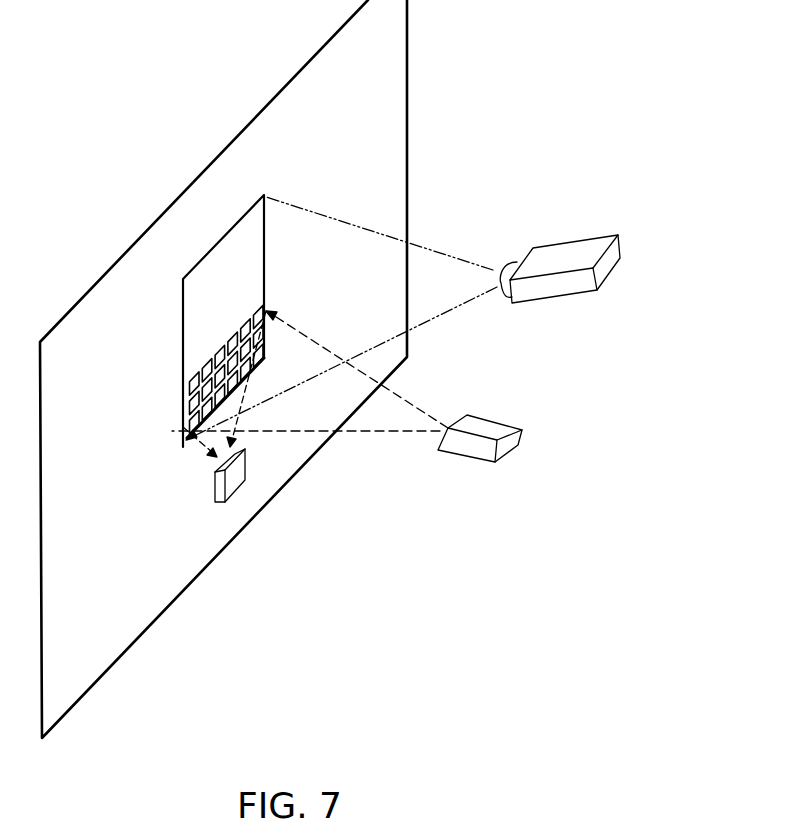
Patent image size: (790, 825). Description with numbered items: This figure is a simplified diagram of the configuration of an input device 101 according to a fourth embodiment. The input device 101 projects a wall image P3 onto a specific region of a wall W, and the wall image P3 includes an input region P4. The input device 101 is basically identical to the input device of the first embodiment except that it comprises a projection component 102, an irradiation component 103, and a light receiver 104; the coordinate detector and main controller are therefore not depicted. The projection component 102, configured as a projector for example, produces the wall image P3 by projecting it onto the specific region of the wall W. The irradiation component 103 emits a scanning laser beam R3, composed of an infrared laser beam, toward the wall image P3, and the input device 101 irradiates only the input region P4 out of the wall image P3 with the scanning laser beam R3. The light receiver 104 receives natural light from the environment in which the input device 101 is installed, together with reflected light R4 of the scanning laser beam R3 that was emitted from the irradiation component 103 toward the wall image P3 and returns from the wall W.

The wall W is at (408, 58).
The input device 101 is at (406, 333).
The projection component 102 is at (618, 235).
The irradiation component 103 is at (465, 462).
The light receiver 104 is at (238, 492).
The wall image P3 is at (156, 335).
The input region P4 is at (182, 406).
The scanning laser beam R3 is at (372, 433).
The reflected light R4 is at (206, 448).